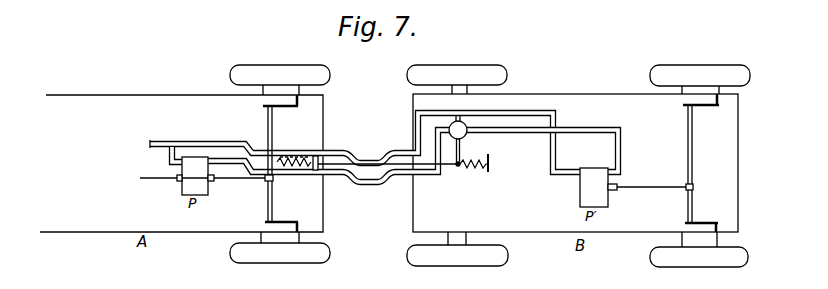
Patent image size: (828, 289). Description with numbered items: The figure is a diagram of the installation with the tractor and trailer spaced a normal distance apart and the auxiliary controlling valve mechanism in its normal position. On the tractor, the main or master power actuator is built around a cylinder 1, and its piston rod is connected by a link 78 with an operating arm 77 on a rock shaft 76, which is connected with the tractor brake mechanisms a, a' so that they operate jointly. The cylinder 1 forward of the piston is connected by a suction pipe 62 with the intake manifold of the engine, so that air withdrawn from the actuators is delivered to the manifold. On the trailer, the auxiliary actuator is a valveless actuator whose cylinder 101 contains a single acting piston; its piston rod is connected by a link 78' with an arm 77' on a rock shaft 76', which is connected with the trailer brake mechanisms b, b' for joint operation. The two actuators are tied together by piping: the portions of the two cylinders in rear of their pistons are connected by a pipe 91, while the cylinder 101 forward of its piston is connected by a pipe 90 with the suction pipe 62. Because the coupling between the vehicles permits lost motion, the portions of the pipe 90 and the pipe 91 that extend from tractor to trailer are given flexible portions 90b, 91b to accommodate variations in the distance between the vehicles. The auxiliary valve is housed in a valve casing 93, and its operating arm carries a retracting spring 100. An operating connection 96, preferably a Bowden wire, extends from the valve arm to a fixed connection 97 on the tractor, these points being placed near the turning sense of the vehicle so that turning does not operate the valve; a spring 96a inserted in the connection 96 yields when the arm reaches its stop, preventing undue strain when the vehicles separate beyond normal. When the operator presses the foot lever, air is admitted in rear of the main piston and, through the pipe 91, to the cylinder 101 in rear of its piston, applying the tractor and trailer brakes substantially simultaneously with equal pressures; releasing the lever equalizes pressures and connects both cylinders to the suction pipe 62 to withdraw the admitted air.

The cylinder 1 is at (186, 186).
The suction pipe 62 is at (159, 142).
The rock shaft 76 is at (270, 163).
The rock shaft 76' is at (704, 163).
The operating arm 77 is at (283, 185).
The arm 77' is at (706, 190).
The link 78 is at (202, 191).
The link 78' is at (648, 180).
The pipe 90 is at (334, 151).
The flexible portion 90b is at (373, 159).
The pipe 91 is at (634, 152).
The flexible portion 91b is at (372, 183).
The valve casing 93 is at (467, 132).
The operating connection 96 is at (453, 167).
The spring 96a is at (286, 158).
The fixed connection 97 is at (317, 157).
The retracting spring 100 is at (473, 173).
The cylinder 101 is at (580, 197).
The tractor brake mechanism a is at (319, 238).
The tractor brake mechanism a' is at (325, 87).
The trailer brake mechanism b is at (738, 241).
The trailer brake mechanism b' is at (742, 94).